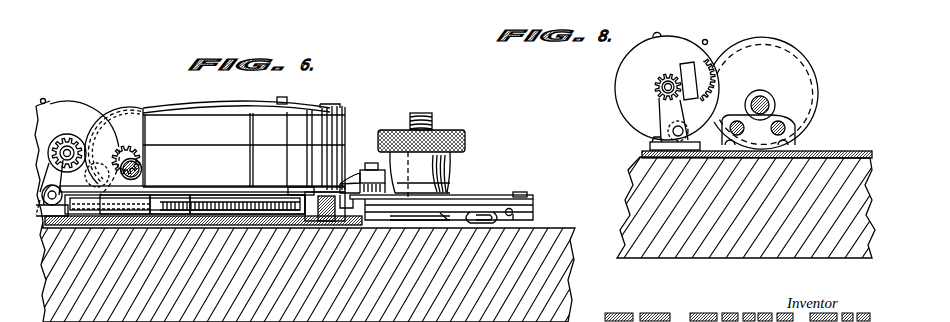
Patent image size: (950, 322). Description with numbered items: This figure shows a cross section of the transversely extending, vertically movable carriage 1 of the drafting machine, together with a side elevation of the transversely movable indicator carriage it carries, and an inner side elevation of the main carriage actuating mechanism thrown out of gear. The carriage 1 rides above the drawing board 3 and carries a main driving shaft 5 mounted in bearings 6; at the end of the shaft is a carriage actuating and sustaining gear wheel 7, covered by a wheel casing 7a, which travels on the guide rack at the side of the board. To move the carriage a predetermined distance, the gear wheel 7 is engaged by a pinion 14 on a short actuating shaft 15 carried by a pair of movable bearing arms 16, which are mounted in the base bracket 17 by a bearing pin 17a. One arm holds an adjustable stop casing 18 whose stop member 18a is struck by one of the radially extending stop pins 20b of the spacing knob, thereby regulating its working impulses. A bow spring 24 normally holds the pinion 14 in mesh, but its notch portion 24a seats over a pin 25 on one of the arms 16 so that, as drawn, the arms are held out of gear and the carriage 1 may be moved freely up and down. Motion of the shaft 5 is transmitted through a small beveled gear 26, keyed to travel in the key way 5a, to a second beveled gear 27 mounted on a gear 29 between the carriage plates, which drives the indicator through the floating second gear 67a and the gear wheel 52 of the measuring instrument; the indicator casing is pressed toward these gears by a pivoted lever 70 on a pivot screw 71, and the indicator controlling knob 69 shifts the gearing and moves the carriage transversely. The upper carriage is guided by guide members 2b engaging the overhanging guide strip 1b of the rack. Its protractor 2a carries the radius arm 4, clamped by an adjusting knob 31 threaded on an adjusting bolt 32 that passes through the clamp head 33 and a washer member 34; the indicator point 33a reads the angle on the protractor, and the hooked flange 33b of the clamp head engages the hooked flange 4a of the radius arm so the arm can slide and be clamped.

In FIG. 6, the vertically movable carriage 1 is at (262, 224).
In FIG. 8, the vertically movable carriage 1 is at (850, 150).
In FIG. 6, the guide strip 1b is at (313, 193).
In FIG. 6, the protractor 2a is at (503, 196).
In FIG. 6, the guide members 2b is at (297, 190).
In FIG. 6, the drawing board 3 is at (222, 230).
In FIG. 8, the drawing board 3 is at (617, 237).
In FIG. 6, the radius arm 4 is at (535, 225).
In FIG. 6, the hooked flange 4a is at (485, 198).
In FIG. 6, the driving shaft 5 is at (141, 167).
In FIG. 6, the key way 5a is at (142, 161).
In FIG. 8, the bearings 6 is at (772, 98).
In FIG. 6, the carriage actuating and sustaining gear wheel 7 is at (128, 107).
In FIG. 8, the carriage actuating and sustaining gear wheel 7 is at (712, 95).
In FIG. 6, the wheel casing 7a is at (139, 108).
In FIG. 8, the wheel casing 7a is at (810, 40).
In FIG. 6, the pinion 14 is at (63, 136).
In FIG. 8, the pinion 14 is at (662, 76).
In FIG. 6, the actuating shaft 15 is at (68, 149).
In FIG. 8, the actuating shaft 15 is at (653, 88).
In FIG. 6, the bearing arms 16 is at (112, 166).
In FIG. 8, the bearing arms 16 is at (675, 114).
In FIG. 6, the base bracket 17 is at (75, 200).
In FIG. 8, the base bracket 17 is at (652, 141).
In FIG. 6, the bearing pin 17a is at (52, 205).
In FIG. 8, the bearing pin 17a is at (670, 128).
In FIG. 6, the stop casing 18 is at (87, 116).
In FIG. 8, the stop casing 18 is at (676, 46).
In FIG. 8, the stop member 18a is at (657, 33).
In FIG. 6, the stop pins 20b is at (43, 98).
In FIG. 8, the stop pins 20b is at (707, 40).
In FIG. 6, the bow spring 24 is at (47, 186).
In FIG. 8, the bow spring 24 is at (728, 115).
In FIG. 8, the notch portion 24a is at (735, 62).
In FIG. 6, the pin 25 is at (45, 227).
In FIG. 8, the pin 25 is at (792, 146).
In FIG. 6, the beveled gear 26 is at (130, 150).
In FIG. 6, the second beveled gear 27 is at (127, 196).
In FIG. 6, the gear 29 is at (120, 198).
In FIG. 6, the adjusting knob 31 is at (388, 128).
In FIG. 6, the adjusting bolt 32 is at (432, 122).
In FIG. 6, the clamp head 33 is at (448, 213).
In FIG. 6, the indicator point 33a is at (540, 187).
In FIG. 6, the hooked flange 33b is at (480, 224).
In FIG. 6, the washer member 34 is at (378, 209).
In FIG. 6, the gear wheel 52 is at (238, 226).
In FIG. 6, the second gear 67a is at (196, 207).
In FIG. 6, the indicator controlling knob 69 is at (327, 104).
In FIG. 6, the pivoted lever 70 is at (352, 172).
In FIG. 6, the pivot screw 71 is at (368, 163).